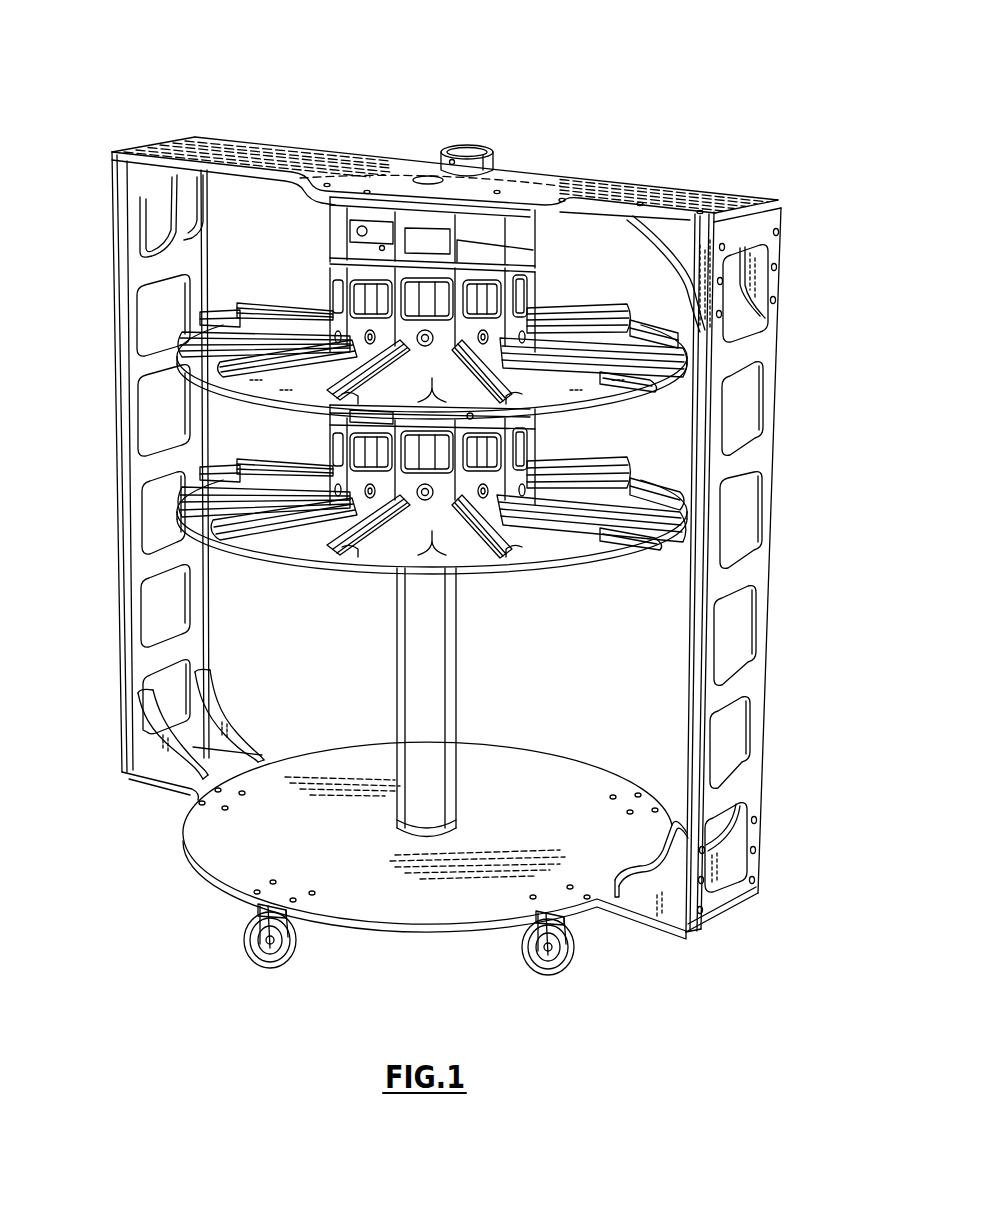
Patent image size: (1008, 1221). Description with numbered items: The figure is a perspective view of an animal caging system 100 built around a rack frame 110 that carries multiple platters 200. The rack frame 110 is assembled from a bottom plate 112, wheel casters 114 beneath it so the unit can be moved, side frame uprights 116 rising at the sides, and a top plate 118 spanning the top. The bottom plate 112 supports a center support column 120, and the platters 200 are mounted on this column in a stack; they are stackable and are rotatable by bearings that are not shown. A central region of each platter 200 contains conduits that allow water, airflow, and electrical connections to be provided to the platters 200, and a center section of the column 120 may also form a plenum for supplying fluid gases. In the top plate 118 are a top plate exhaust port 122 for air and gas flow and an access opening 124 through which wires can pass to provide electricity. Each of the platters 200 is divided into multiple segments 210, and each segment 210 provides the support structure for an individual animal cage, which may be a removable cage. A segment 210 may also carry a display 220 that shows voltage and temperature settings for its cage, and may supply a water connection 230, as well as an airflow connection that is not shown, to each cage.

The animal caging system 100 is at (711, 33).
The rack frame 110 is at (776, 906).
The bottom plate 112 is at (553, 774).
The wheel casters 114 is at (592, 978).
The side frame uprights 116 is at (784, 644).
The top plate 118 is at (695, 180).
The center support column 120 is at (478, 667).
The top plate exhaust port 122 is at (462, 128).
The access opening 124 is at (413, 156).
The platters 200 is at (200, 555).
The segments 210 is at (527, 571).
The display 220 is at (516, 262).
The water connection 230 is at (419, 513).